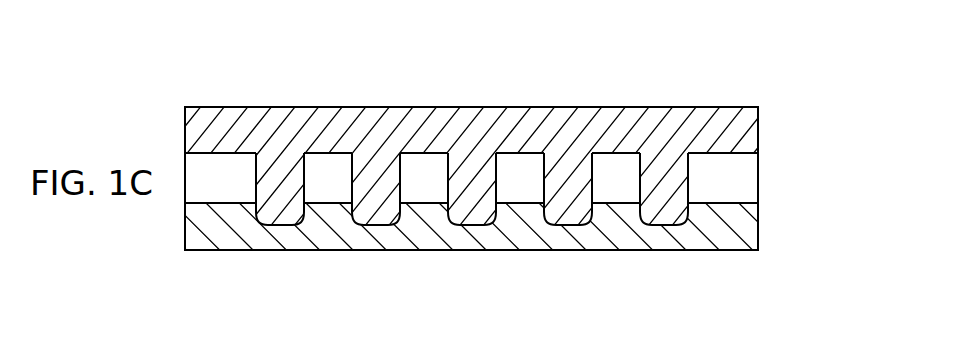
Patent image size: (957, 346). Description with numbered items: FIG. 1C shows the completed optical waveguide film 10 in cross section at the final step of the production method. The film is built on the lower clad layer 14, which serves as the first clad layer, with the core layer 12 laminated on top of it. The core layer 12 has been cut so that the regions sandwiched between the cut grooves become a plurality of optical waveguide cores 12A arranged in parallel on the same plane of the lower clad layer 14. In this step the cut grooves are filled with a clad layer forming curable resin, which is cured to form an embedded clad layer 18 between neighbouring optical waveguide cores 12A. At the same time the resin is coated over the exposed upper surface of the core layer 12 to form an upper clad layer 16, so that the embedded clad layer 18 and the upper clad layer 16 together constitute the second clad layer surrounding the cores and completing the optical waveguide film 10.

The optical waveguide film 10 is at (636, 78).
The core layer 12 is at (762, 177).
The optical waveguide core 12A is at (622, 295).
The lower clad layer 14 is at (762, 225).
The upper clad layer 16 is at (762, 132).
The embedded clad layer 18 is at (670, 295).